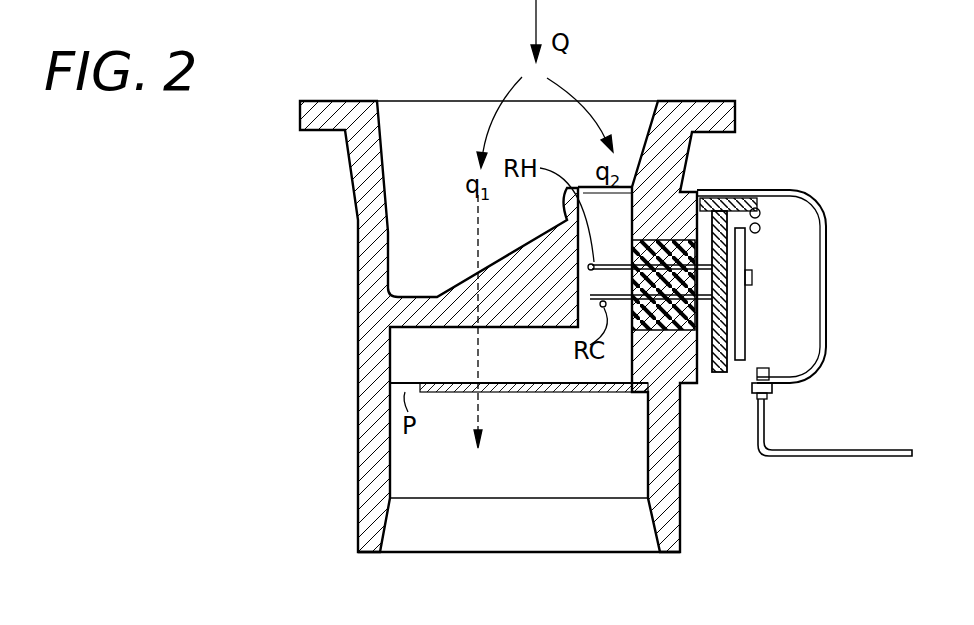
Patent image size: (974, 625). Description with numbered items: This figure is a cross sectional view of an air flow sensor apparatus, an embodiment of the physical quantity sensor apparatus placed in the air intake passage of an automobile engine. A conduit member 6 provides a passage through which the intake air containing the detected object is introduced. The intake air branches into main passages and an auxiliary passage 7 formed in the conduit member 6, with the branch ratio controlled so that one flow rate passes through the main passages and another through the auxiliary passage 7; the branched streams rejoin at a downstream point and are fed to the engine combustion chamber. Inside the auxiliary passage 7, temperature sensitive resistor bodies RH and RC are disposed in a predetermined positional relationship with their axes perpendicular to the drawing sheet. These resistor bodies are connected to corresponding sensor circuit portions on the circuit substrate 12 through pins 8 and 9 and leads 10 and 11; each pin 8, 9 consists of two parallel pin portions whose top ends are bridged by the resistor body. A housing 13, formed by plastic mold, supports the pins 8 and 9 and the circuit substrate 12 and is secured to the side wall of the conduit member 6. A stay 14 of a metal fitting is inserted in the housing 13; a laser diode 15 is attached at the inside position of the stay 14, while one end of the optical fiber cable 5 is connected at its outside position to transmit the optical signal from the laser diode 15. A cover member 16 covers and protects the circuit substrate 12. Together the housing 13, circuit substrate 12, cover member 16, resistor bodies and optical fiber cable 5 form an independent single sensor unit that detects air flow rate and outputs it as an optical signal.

The optical fiber cable 5 is at (766, 430).
The conduit member 6 is at (323, 110).
The auxiliary passage 7 is at (621, 203).
The pin 8 is at (698, 190).
The pin 9 is at (690, 386).
The lead 10 is at (730, 200).
The lead 11 is at (760, 230).
The circuit substrate 12 is at (745, 258).
The housing 13 is at (728, 212).
The stay 14 is at (773, 390).
The laser diode 15 is at (769, 370).
The cover member 16 is at (827, 297).